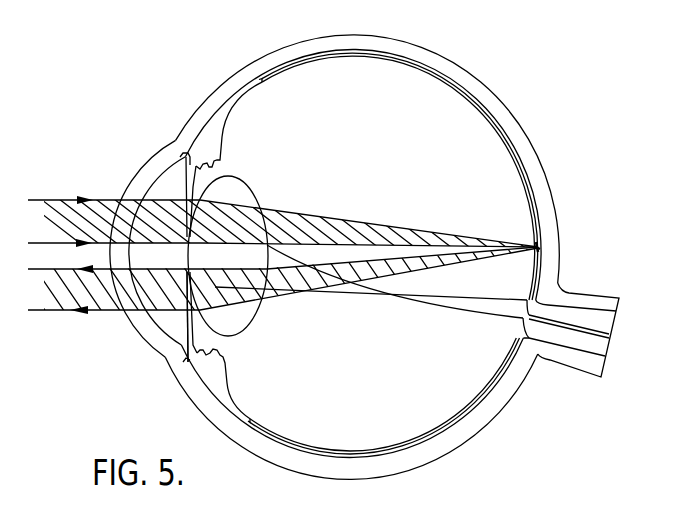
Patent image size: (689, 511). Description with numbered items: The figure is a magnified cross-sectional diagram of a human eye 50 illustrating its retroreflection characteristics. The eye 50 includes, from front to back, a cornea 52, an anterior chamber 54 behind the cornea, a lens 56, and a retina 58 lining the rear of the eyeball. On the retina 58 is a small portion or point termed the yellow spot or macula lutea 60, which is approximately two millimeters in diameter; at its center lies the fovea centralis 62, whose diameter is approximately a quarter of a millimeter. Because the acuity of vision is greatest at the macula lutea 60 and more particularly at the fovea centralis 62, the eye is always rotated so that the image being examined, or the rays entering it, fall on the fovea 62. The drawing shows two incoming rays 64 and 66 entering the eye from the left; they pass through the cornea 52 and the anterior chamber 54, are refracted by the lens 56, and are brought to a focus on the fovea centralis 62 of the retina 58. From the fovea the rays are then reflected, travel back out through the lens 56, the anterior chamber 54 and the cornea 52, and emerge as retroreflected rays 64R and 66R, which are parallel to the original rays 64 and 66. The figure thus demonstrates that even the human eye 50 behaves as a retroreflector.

The human eye 50 is at (562, 124).
The cornea 52 is at (136, 191).
The anterior chamber 54 is at (172, 325).
The lens 56 is at (235, 322).
The retina 58 is at (419, 67).
The yellow spot or macula lutea 60 is at (537, 243).
The fovea centralis 62 is at (531, 256).
The ray 64 is at (56, 200).
The ray 66 is at (44, 243).
The retroreflected ray 64R is at (58, 311).
The retroreflected ray 66R is at (44, 269).